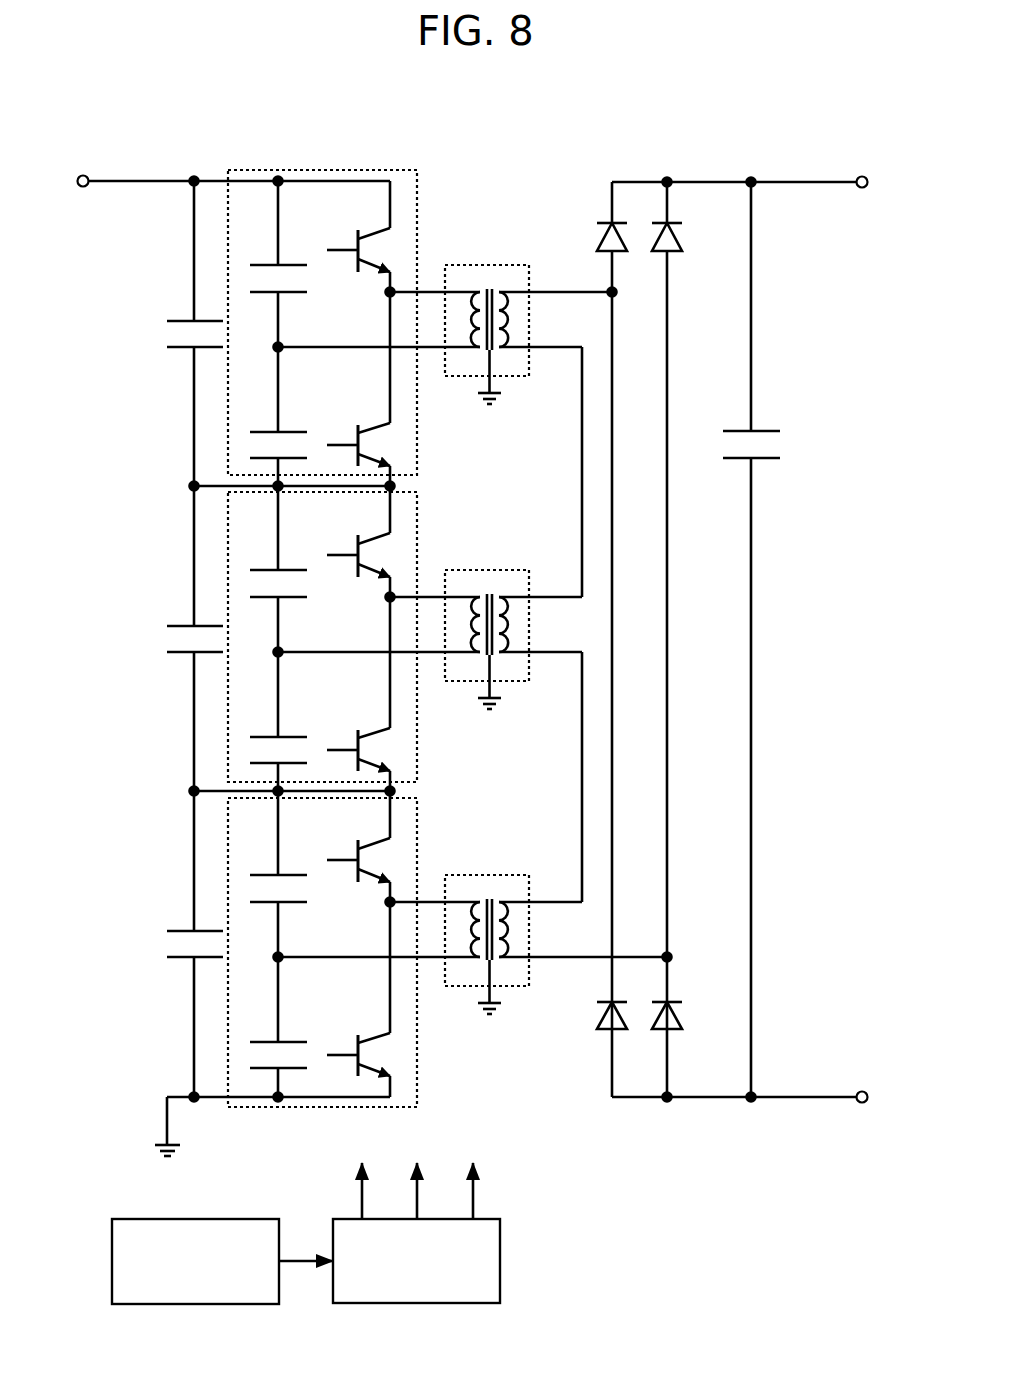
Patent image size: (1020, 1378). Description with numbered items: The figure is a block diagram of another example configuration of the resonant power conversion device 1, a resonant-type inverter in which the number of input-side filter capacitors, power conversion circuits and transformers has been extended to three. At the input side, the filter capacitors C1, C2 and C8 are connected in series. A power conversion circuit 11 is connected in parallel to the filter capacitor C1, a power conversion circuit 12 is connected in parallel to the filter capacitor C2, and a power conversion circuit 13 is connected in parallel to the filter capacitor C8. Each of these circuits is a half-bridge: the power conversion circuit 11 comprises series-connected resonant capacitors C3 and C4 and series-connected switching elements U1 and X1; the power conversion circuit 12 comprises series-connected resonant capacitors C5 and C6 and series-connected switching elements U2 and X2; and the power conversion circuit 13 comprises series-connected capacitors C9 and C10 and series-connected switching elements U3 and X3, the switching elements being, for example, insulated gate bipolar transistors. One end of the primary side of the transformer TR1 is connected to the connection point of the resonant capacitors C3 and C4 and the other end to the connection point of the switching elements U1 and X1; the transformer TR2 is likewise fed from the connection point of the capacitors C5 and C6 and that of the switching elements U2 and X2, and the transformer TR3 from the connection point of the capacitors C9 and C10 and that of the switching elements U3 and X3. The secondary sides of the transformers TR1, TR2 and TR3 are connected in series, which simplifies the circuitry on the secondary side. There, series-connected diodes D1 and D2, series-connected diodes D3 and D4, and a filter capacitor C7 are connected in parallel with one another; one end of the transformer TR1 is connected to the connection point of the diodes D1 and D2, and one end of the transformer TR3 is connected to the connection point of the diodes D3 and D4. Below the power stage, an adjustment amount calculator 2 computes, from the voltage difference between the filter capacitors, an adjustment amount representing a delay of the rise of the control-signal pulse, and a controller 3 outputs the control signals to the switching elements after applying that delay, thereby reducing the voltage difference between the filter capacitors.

The resonant power conversion device 1 is at (476, 152).
The adjustment amount calculator 2 is at (228, 1219).
The controller 3 is at (372, 1303).
The power conversion circuit 11 is at (280, 170).
The power conversion circuit 12 is at (228, 707).
The power conversion circuit 13 is at (228, 1040).
The filter capacitor C1 is at (176, 321).
The filter capacitor C2 is at (171, 626).
The filter capacitor C8 is at (171, 931).
The resonant capacitor C3 is at (293, 292).
The resonant capacitor C4 is at (261, 432).
The resonant capacitor C5 is at (293, 597).
The resonant capacitor C6 is at (261, 737).
The resonant capacitor C9 is at (293, 902).
The resonant capacitor C10 is at (261, 1042).
The filter capacitor C7 is at (765, 431).
The switching element U1 is at (358, 235).
The switching element U2 is at (358, 540).
The switching element U3 is at (358, 845).
The switching element X1 is at (358, 428).
The switching element X2 is at (358, 733).
The switching element X3 is at (358, 1038).
The transformer TR1 is at (482, 265).
The transformer TR2 is at (482, 570).
The transformer TR3 is at (482, 875).
The diode D1 is at (600, 223).
The diode D2 is at (606, 1029).
The diode D3 is at (672, 253).
The diode D4 is at (672, 1022).